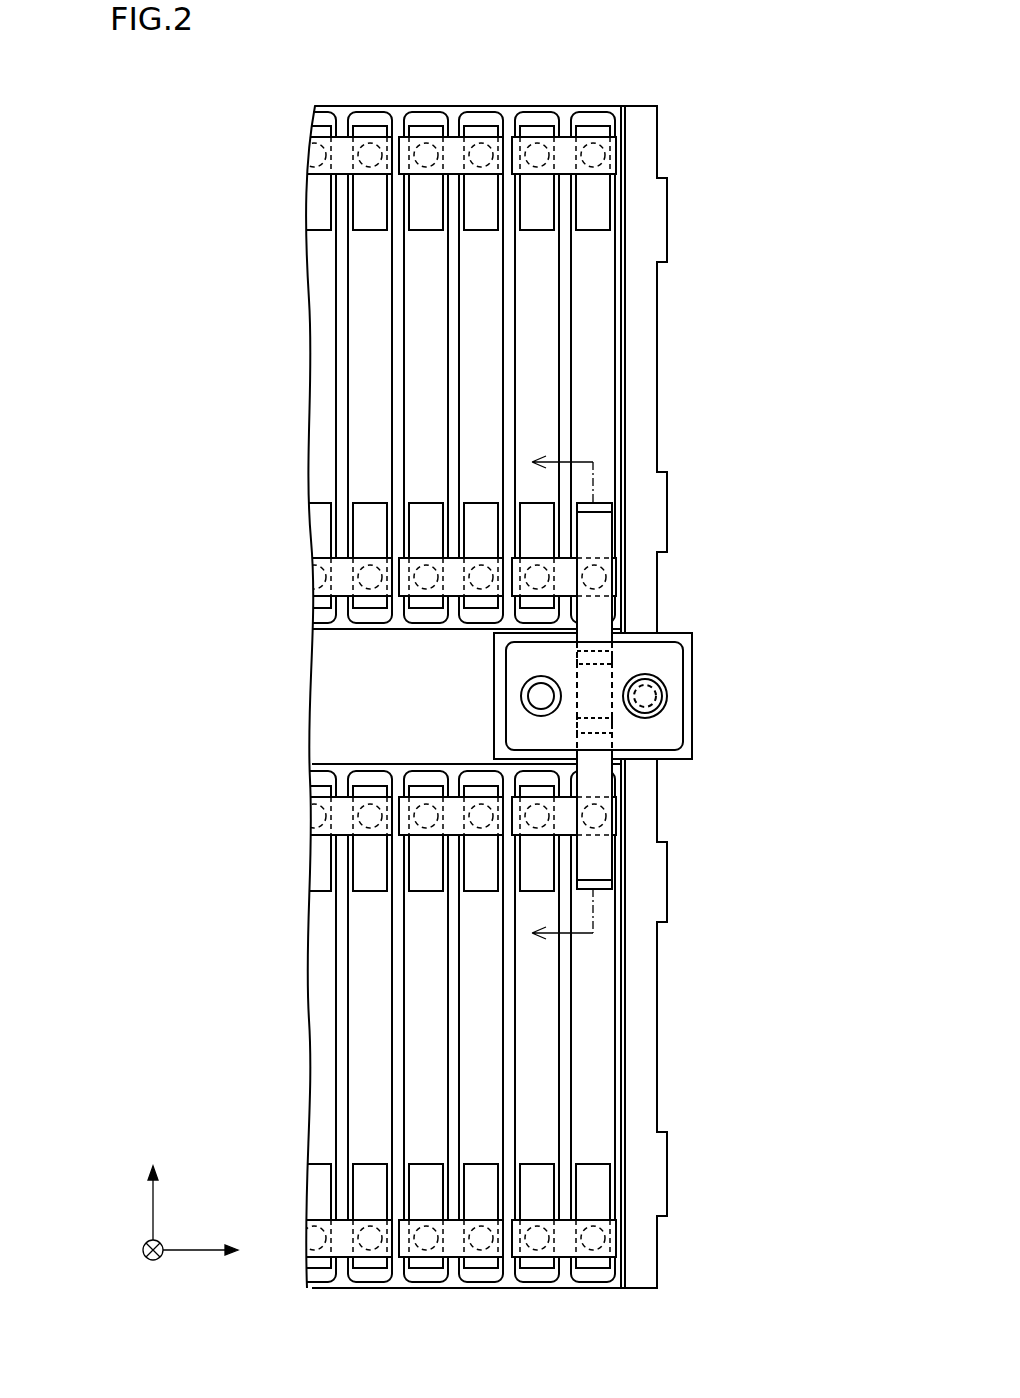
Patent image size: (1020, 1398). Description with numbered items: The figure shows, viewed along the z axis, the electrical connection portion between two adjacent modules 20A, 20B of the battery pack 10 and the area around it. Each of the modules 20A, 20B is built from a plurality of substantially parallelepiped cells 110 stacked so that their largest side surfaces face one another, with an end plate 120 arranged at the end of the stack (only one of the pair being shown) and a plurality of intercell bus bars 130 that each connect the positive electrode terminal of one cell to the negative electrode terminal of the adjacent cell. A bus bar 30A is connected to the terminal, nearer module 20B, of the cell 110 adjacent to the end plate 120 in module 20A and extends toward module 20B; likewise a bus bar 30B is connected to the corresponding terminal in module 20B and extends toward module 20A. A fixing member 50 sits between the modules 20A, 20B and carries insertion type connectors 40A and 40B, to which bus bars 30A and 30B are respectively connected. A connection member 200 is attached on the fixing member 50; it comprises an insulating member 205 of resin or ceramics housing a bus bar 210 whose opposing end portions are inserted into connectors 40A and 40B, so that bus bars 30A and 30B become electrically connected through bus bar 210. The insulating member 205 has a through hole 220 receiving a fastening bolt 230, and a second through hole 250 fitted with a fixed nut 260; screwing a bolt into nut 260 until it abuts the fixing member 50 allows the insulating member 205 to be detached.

The battery pack 10 is at (708, 41).
The module 20A is at (270, 328).
The module 20B is at (270, 990).
The bus bar 30A is at (594, 532).
The bus bar 30B is at (594, 860).
The connector 40A is at (572, 653).
The connector 40B is at (572, 737).
The fixing member 50 is at (693, 742).
The cell 110 is at (367, 112).
The end plate 120 is at (660, 147).
The intercell bus bar 130 is at (340, 137).
The connection member 200 is at (591, 653).
The insulating member 205 is at (685, 655).
The bus bar 210 is at (598, 692).
The through hole 220 is at (653, 694).
The fastening bolt 230 is at (662, 712).
The through hole 250 is at (524, 701).
The nut 260 is at (523, 690).